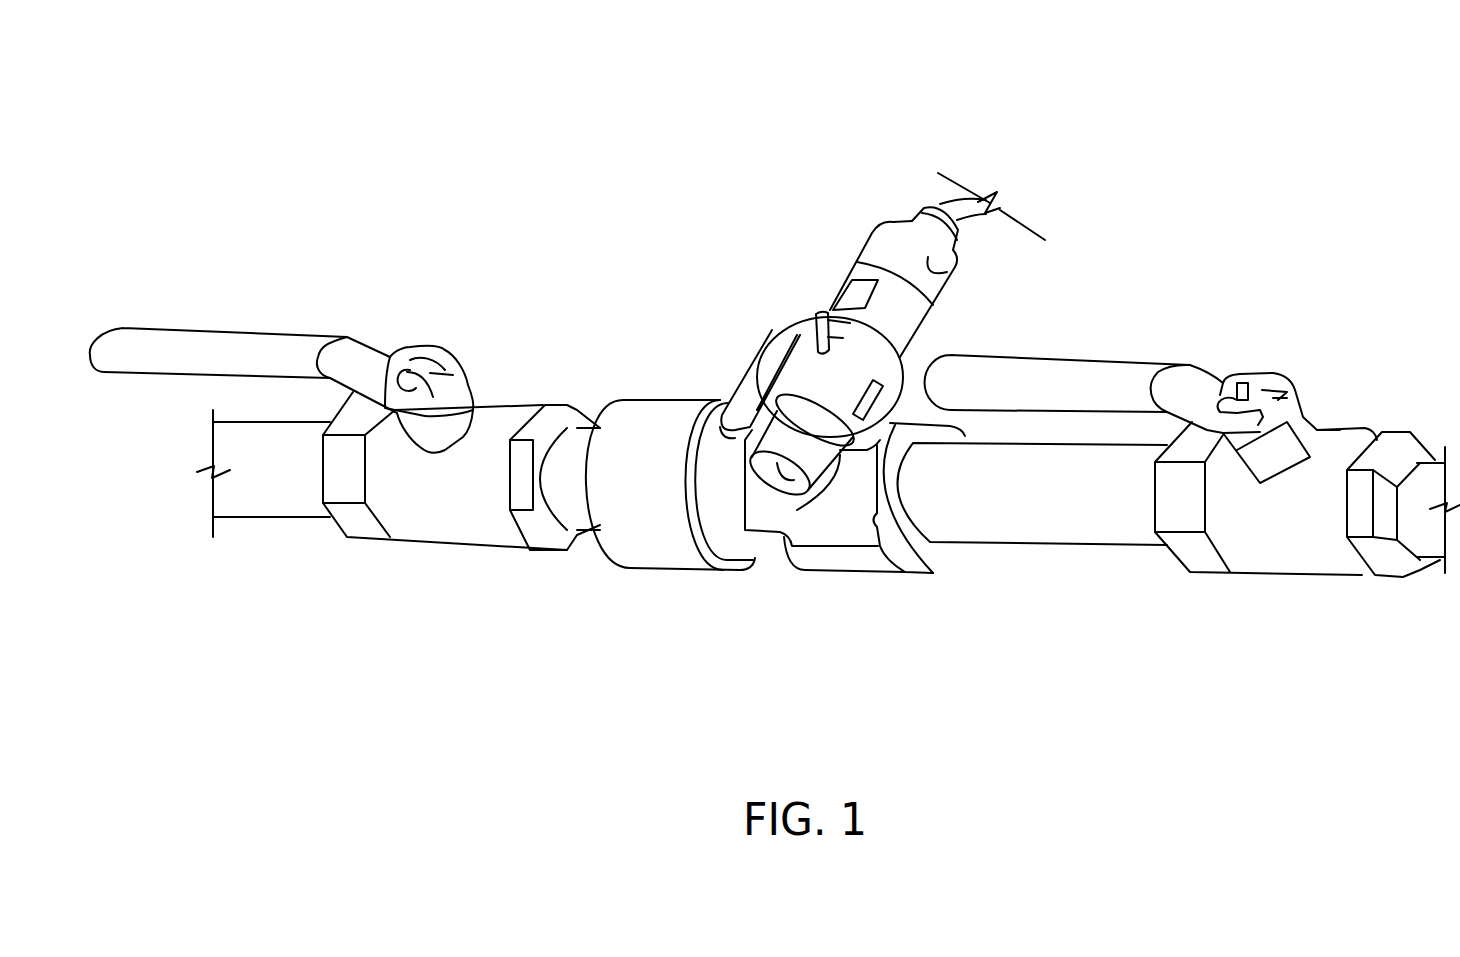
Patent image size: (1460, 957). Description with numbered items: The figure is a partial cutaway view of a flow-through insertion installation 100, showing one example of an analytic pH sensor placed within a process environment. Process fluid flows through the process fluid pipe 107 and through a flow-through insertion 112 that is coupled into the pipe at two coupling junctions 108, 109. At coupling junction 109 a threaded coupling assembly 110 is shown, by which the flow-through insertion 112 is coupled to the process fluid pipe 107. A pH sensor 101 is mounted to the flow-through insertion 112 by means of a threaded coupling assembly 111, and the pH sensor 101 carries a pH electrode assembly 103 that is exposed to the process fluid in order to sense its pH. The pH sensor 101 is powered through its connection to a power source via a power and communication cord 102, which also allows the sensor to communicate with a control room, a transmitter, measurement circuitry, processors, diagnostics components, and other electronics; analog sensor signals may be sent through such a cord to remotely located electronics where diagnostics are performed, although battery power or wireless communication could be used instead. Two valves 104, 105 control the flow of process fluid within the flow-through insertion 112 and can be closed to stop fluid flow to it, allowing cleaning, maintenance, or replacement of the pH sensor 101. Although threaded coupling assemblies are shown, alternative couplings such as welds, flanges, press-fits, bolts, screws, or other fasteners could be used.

The flow-through insertion installation 100 is at (1203, 227).
The pH sensor 101 is at (870, 237).
The power and communication cord 102 is at (957, 195).
The pH electrode assembly 103 is at (783, 470).
The valve 104 is at (1262, 373).
The valve 105 is at (457, 367).
The process fluid pipe 107 is at (247, 523).
The coupling junction 108 is at (613, 398).
The coupling junction 109 is at (960, 540).
The threaded coupling assembly 110 is at (888, 490).
The threaded coupling assembly 111 is at (853, 370).
The flow-through insertion 112 is at (890, 585).